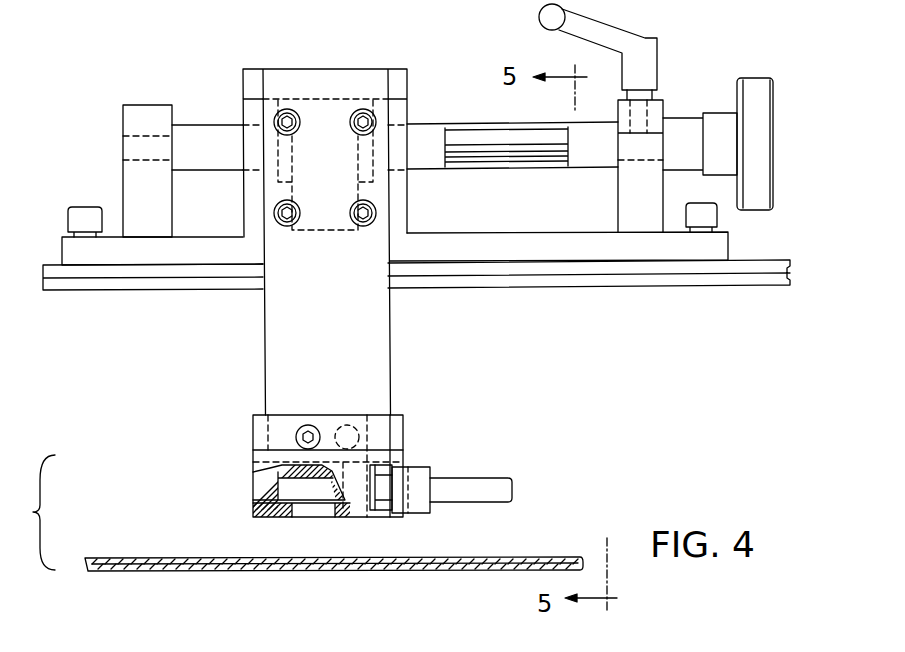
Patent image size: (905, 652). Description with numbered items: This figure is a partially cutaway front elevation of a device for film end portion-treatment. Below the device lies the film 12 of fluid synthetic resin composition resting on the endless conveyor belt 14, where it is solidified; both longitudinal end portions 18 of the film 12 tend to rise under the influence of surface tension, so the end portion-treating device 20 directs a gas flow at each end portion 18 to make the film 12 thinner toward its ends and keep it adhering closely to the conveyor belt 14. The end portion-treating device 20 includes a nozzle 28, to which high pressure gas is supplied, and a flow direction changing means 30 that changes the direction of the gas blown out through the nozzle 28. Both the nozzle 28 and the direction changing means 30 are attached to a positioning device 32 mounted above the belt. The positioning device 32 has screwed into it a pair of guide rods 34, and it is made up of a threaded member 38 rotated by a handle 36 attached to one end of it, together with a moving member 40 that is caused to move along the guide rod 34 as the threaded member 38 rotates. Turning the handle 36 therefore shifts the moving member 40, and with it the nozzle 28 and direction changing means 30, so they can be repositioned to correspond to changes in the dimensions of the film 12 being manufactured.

The film 12 is at (308, 536).
The conveyor belt 14 is at (415, 572).
The end portions 18 is at (349, 556).
The end portion-treating device 20 is at (518, 389).
The nozzle 28 is at (302, 514).
The flow direction changing means 30 is at (405, 447).
The positioning device 32 is at (428, 89).
The guide rods 34 is at (190, 137).
The handle 36 is at (748, 83).
The threaded member 38 is at (474, 156).
The moving member 40 is at (392, 76).